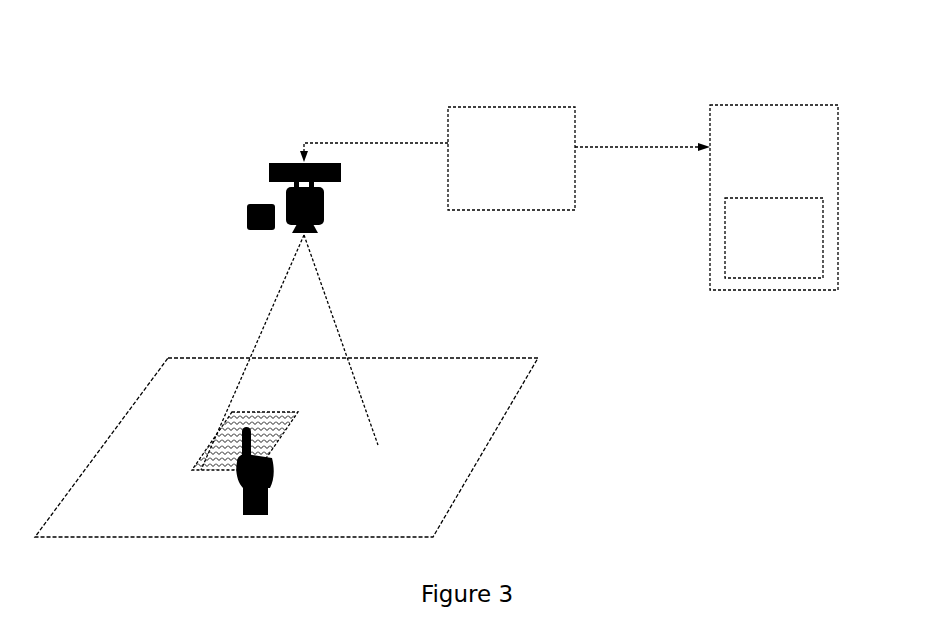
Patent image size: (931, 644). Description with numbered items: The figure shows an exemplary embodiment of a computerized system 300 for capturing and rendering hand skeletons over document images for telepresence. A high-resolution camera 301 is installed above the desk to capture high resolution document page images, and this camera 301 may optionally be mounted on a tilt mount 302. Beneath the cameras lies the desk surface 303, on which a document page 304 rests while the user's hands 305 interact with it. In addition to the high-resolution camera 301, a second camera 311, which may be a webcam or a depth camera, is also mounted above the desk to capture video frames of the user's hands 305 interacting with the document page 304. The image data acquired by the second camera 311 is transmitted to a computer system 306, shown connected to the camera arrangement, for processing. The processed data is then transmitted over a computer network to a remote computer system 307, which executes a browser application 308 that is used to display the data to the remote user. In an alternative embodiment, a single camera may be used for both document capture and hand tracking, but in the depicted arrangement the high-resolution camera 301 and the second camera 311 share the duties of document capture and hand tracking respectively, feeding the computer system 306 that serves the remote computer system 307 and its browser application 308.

The computerized system 300 is at (467, 77).
The high-resolution camera 301 is at (325, 207).
The tilt mount 302 is at (269, 167).
The surface 303 is at (450, 358).
The document page 304 is at (280, 452).
The user's hands 305 is at (268, 508).
The computer system 306 is at (505, 210).
The remote computer system 307 is at (817, 290).
The browser application 308 is at (746, 278).
The second camera 311 is at (247, 220).